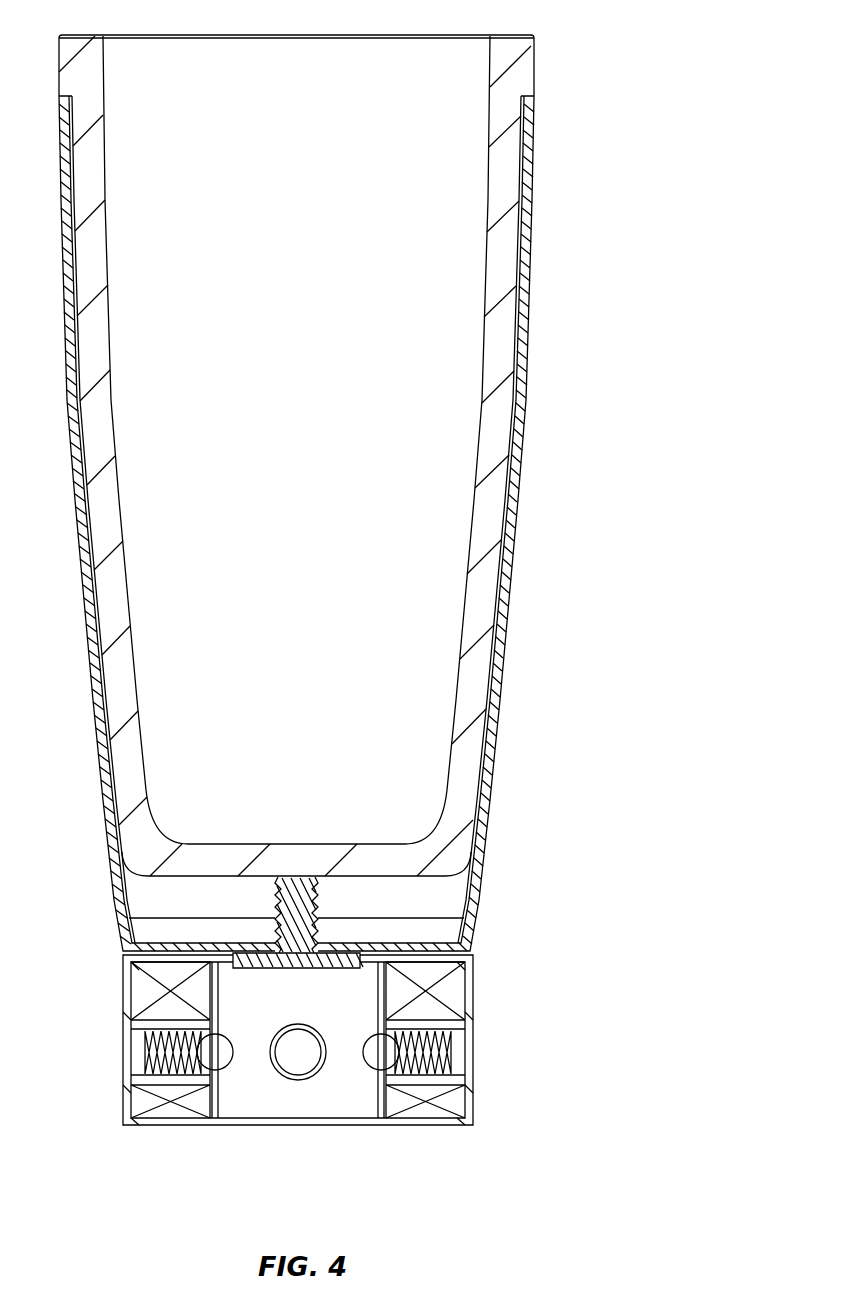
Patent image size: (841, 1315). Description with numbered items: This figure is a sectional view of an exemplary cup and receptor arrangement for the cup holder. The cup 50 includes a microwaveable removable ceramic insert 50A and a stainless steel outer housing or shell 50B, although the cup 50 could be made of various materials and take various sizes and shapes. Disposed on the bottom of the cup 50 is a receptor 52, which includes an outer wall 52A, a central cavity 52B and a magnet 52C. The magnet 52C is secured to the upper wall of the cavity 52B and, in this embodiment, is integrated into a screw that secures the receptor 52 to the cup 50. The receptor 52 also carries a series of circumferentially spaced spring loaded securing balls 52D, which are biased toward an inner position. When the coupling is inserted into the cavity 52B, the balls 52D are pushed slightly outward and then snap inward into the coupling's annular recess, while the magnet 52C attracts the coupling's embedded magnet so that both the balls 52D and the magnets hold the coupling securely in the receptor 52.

The cup 50 is at (383, 493).
The microwaveable removable ceramic insert 50A is at (488, 220).
The stainless steel outer housing or shell 50B is at (528, 241).
The receptor 52 is at (371, 1040).
The outer wall 52A is at (468, 1100).
The central cavity 52B is at (327, 1103).
The magnet 52C is at (330, 968).
The spring loaded securing balls 52D is at (217, 1054).